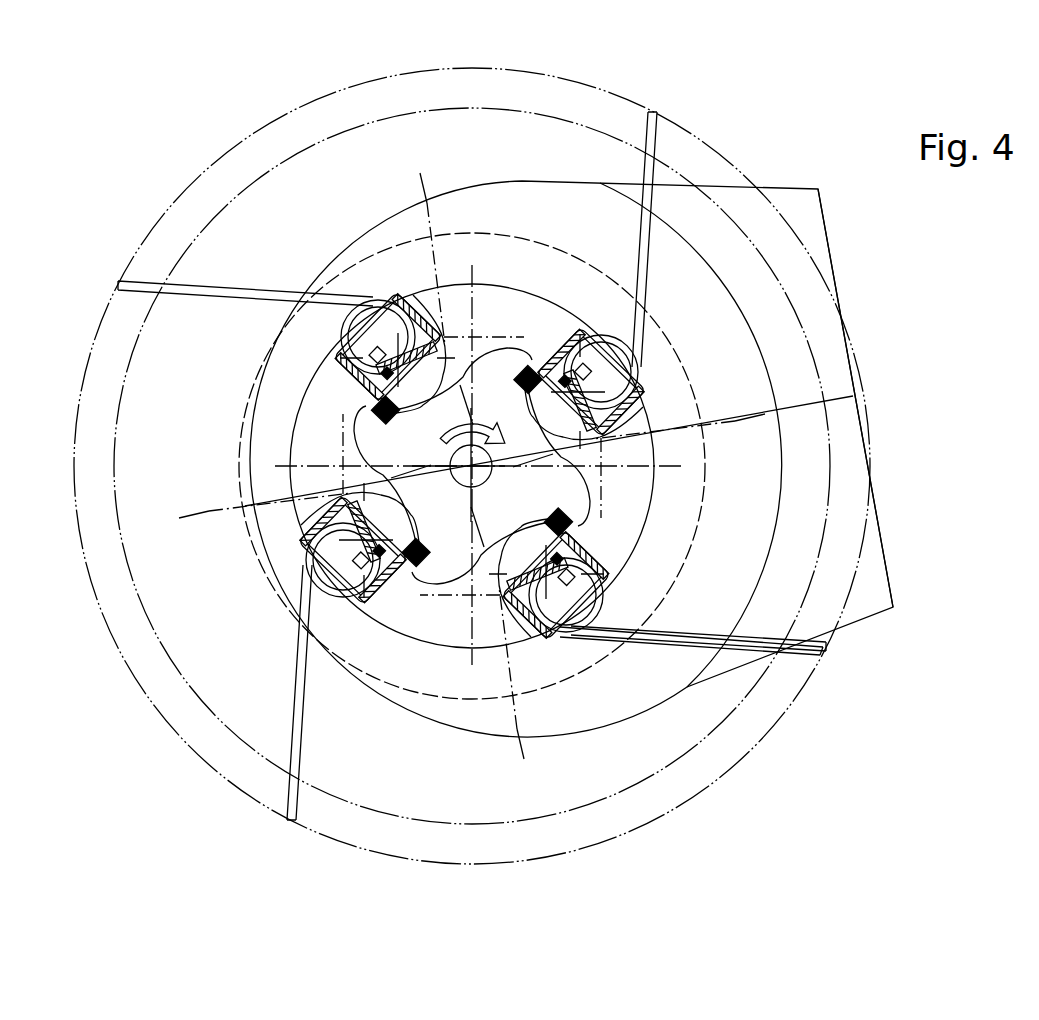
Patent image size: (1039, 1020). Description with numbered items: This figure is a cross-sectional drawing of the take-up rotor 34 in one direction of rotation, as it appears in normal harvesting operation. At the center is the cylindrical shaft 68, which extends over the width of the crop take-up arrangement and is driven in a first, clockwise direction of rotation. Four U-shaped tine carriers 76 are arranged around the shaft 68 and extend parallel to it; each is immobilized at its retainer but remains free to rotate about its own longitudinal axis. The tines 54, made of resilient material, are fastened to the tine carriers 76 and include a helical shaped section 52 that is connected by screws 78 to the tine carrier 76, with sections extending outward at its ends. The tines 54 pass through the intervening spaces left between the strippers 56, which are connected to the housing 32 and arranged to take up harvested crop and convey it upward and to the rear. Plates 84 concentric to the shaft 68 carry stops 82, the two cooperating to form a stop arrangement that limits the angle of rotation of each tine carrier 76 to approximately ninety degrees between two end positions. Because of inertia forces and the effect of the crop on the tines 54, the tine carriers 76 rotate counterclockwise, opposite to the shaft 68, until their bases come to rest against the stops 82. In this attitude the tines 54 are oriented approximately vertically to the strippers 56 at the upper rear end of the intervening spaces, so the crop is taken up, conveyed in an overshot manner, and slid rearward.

The housing 32 is at (870, 620).
The take-up rotor 34 is at (216, 821).
The helical shaped section 52 is at (585, 612).
The tines 54 is at (652, 138).
The strippers 56 is at (458, 190).
The shaft 68 is at (462, 482).
The tine carriers 76 is at (633, 393).
The screws 78 is at (548, 572).
The stops 82 is at (587, 513).
The plates 84 is at (597, 480).